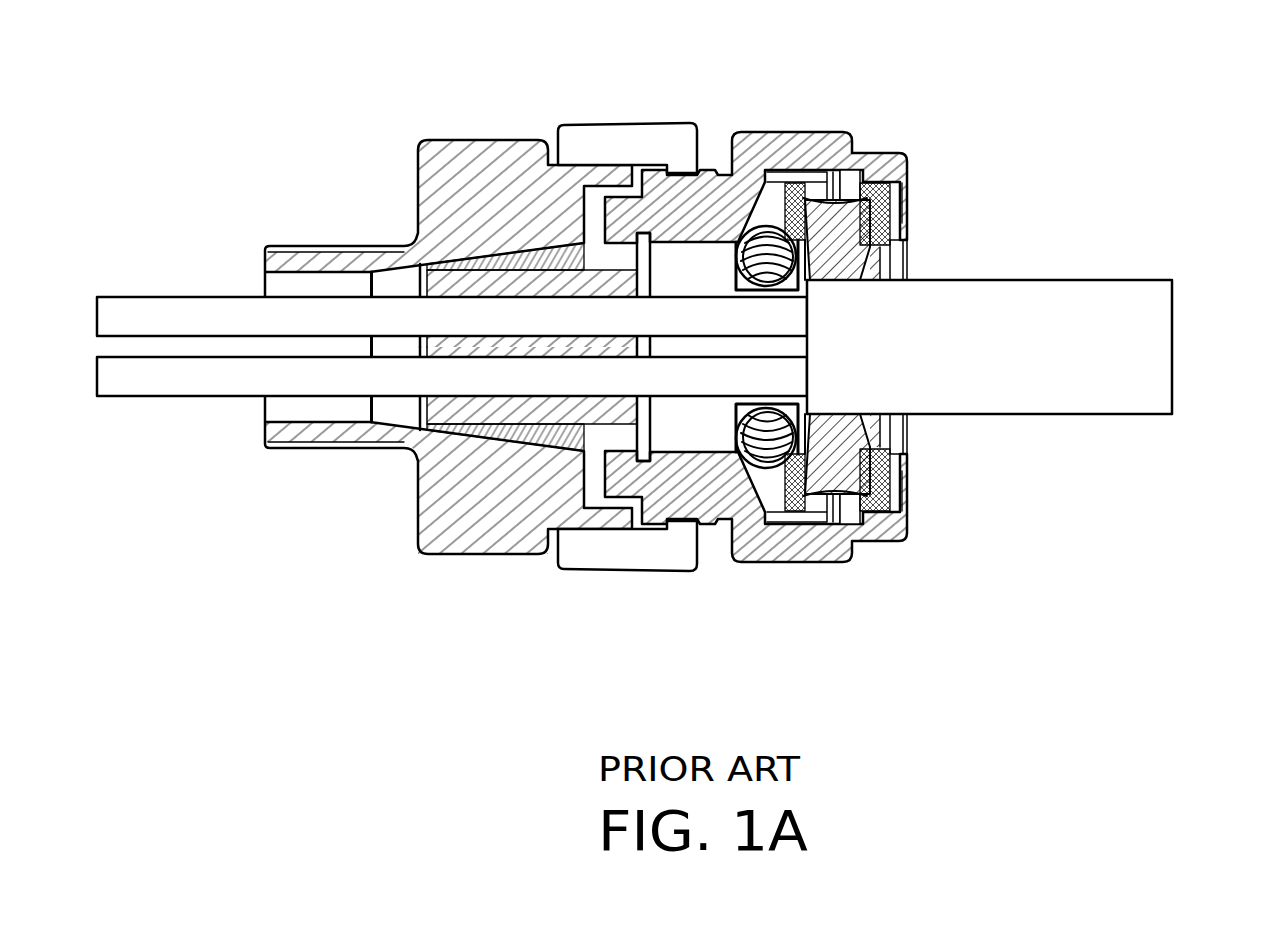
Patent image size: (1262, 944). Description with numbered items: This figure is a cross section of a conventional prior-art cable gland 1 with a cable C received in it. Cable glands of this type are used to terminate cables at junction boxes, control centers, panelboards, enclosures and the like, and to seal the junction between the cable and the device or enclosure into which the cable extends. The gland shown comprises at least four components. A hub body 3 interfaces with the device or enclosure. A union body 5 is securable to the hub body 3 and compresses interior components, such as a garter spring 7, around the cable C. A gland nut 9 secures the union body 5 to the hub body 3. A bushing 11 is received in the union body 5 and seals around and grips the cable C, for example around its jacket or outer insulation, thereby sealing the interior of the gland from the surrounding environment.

The cable gland 1 is at (535, 382).
The hub body 3 is at (452, 533).
The union body 5 is at (703, 194).
The garter spring 7 is at (787, 442).
The gland nut 9 is at (628, 145).
The bushing 11 is at (851, 441).
The cable C is at (1118, 280).